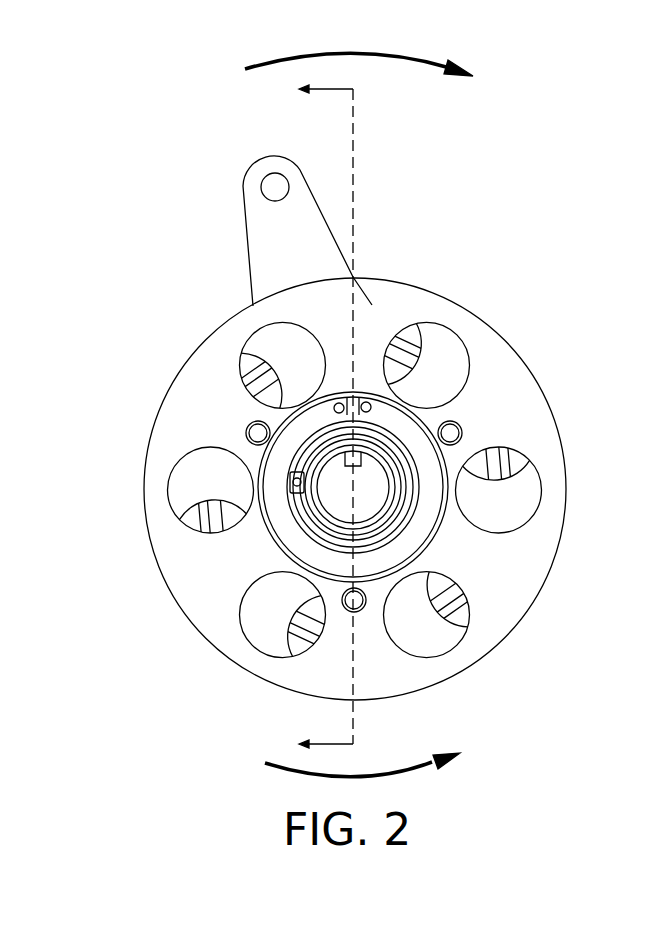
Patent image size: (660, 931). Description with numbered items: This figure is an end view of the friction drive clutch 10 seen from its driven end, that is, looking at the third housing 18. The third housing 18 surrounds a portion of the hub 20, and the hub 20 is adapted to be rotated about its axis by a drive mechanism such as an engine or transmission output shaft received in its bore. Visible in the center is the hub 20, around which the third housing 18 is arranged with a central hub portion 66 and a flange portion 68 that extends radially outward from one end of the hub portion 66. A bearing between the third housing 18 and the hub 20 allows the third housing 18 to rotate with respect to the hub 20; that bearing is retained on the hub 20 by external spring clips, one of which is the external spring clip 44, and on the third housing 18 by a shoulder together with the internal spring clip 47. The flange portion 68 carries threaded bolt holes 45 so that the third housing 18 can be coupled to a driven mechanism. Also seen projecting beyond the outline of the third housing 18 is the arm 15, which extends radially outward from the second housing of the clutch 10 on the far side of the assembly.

The friction drive clutch 10 is at (369, 415).
The arm 15 is at (262, 234).
The third housing 18 is at (534, 438).
The hub 20 is at (397, 440).
The external spring clip 44 is at (295, 498).
The threaded bolt holes 45 is at (451, 432).
The internal spring clip 47 is at (367, 402).
The hub portion 66 is at (443, 561).
The flange portion 68 is at (475, 553).